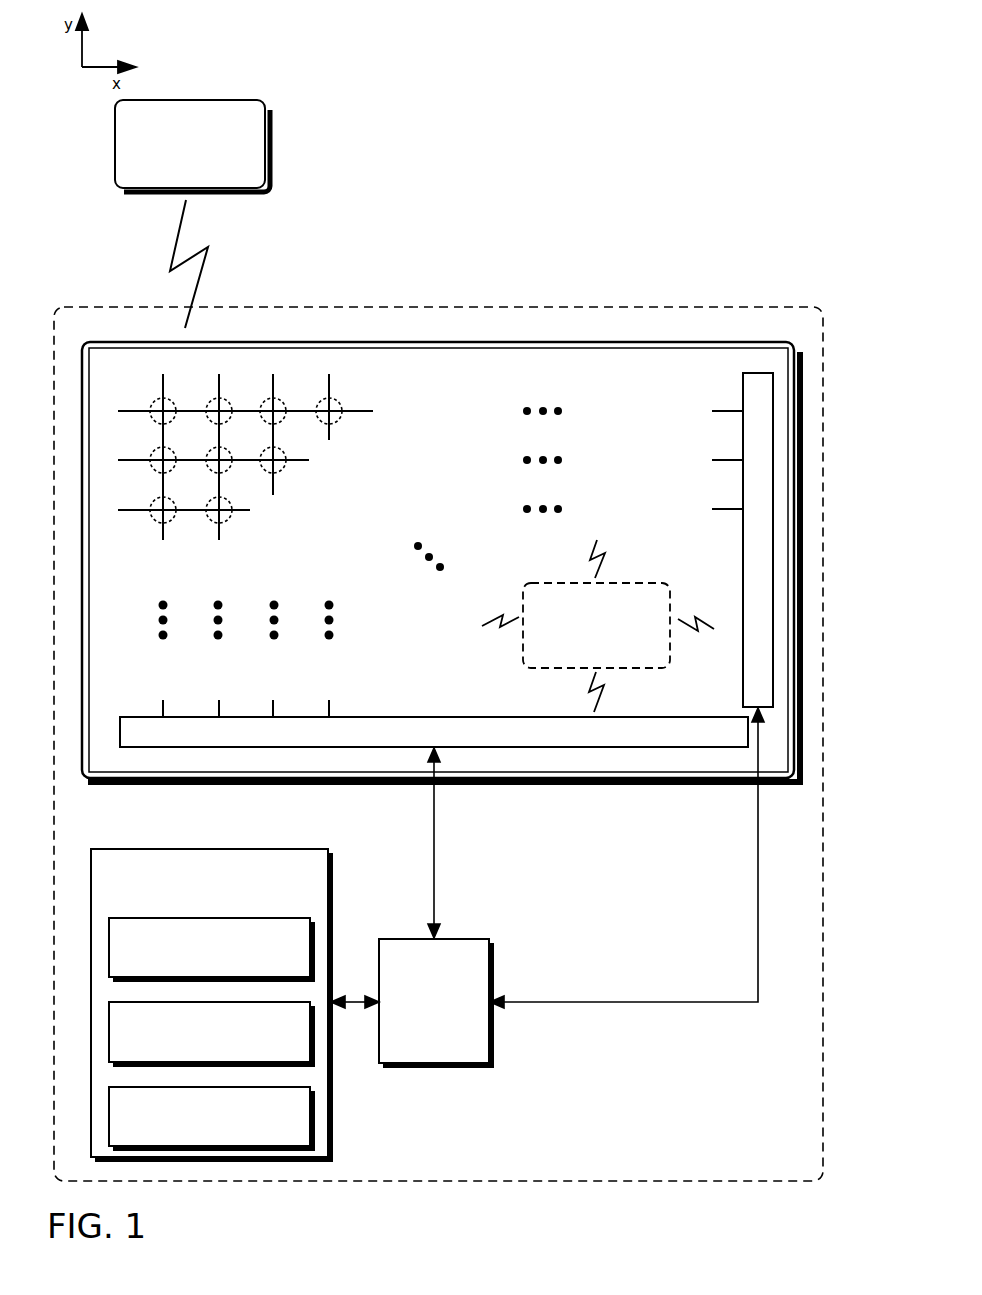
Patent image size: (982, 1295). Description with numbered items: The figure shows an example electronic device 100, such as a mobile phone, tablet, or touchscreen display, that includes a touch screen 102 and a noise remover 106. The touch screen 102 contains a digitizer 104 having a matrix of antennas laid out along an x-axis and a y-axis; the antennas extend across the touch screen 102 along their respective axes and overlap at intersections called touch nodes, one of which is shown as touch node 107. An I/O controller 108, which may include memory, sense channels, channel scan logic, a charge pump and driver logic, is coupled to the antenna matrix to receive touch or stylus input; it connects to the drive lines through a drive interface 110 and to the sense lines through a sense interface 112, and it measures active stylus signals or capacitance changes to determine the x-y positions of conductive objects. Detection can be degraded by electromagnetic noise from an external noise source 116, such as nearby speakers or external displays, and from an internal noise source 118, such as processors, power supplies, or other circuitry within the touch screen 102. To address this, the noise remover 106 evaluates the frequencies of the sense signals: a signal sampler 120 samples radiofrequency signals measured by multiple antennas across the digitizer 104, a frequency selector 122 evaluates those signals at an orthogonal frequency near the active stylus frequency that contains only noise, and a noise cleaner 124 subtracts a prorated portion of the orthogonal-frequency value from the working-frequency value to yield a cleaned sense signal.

The electronic device 100 is at (582, 307).
The touch screen 102 is at (613, 375).
The digitizer 104 is at (134, 355).
The noise remover 106 is at (211, 1004).
The touch node 107 is at (340, 398).
The I/O controller 108 is at (435, 1002).
The drive interface 110 is at (760, 390).
The sense interface 112 is at (197, 737).
The external noise source 116 is at (192, 214).
The internal noise source 118 is at (598, 626).
The signal sampler 120 is at (211, 949).
The frequency selector 122 is at (211, 1033).
The noise cleaner 124 is at (211, 1118).